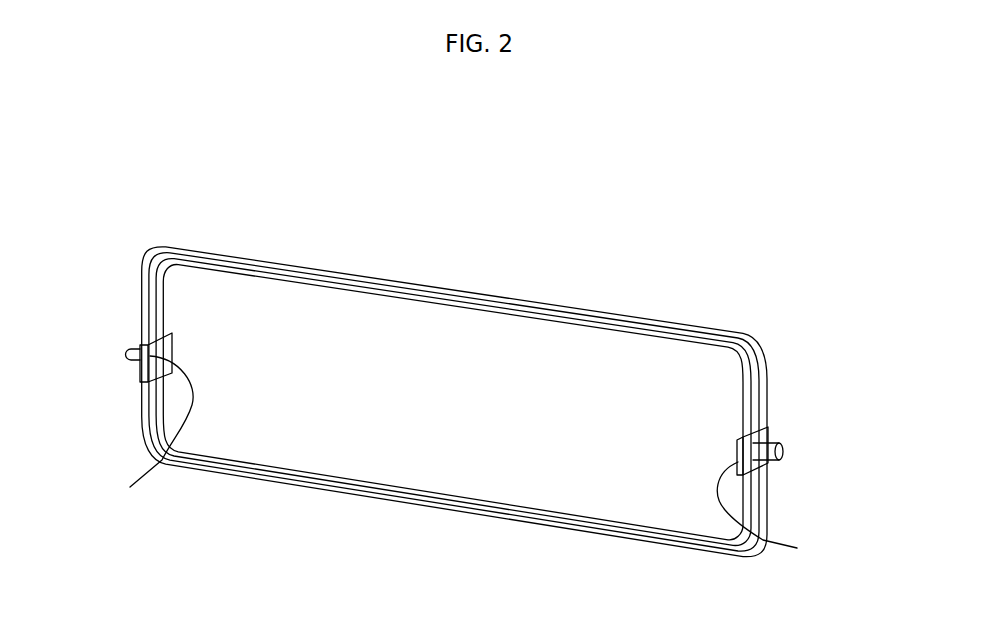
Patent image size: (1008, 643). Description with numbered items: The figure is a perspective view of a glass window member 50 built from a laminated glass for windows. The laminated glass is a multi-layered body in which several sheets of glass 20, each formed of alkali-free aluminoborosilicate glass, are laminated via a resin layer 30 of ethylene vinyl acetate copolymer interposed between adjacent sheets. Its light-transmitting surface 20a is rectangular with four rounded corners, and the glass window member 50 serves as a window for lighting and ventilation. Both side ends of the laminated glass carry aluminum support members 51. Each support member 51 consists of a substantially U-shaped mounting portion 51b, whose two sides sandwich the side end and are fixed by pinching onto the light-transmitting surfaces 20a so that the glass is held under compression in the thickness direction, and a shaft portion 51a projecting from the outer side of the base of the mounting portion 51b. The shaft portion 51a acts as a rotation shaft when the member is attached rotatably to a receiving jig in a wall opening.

The glass window member 50 is at (483, 262).
The sheet glass 20 is at (290, 302).
The light-transmitting surface 20a is at (217, 292).
The resin layer 30 is at (365, 277).
The support member 51 is at (140, 373).
The shaft portion 51a is at (138, 352).
The mounting portion 51b is at (476, 460).